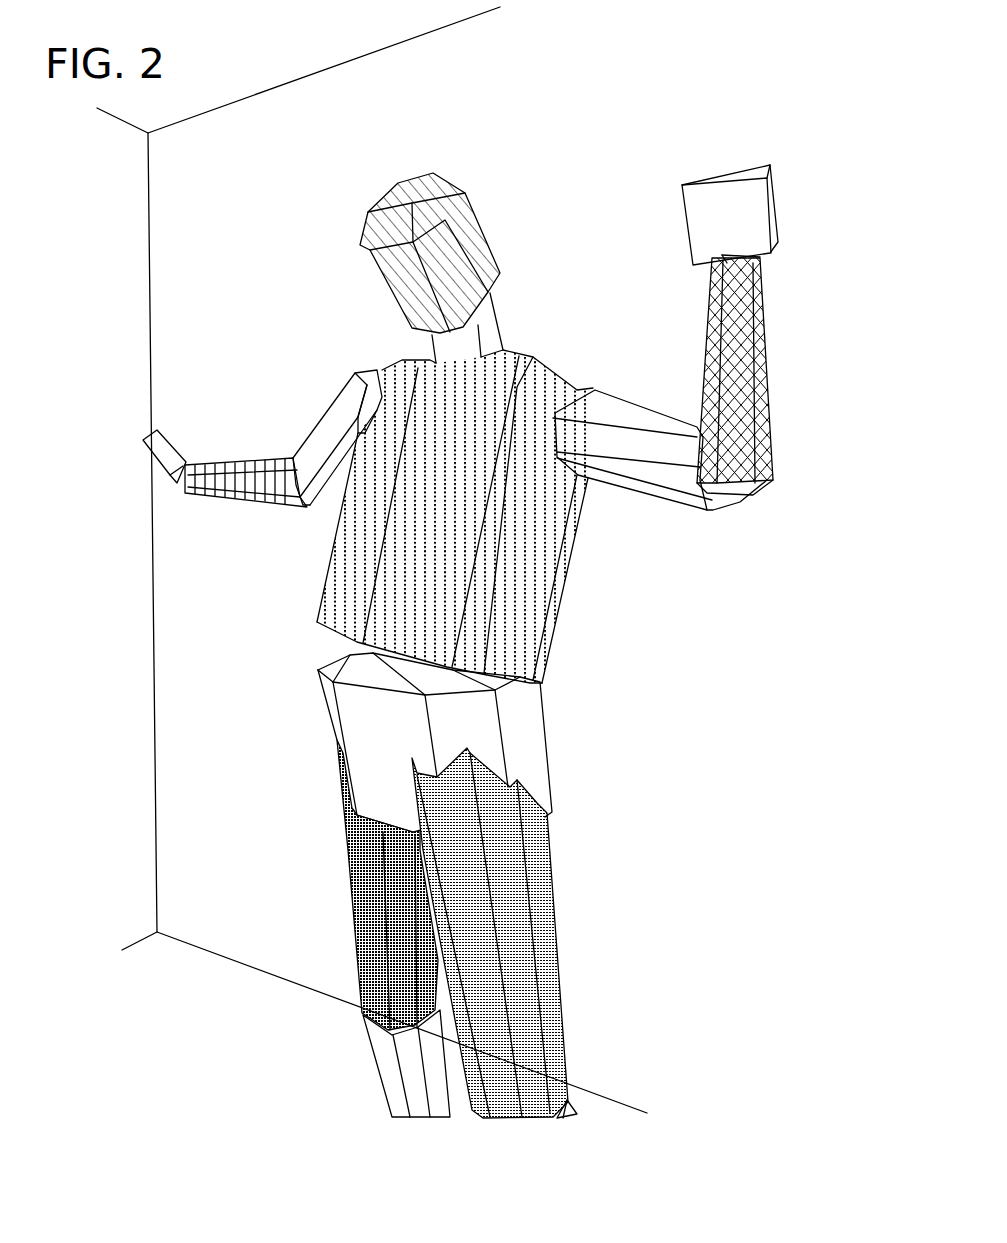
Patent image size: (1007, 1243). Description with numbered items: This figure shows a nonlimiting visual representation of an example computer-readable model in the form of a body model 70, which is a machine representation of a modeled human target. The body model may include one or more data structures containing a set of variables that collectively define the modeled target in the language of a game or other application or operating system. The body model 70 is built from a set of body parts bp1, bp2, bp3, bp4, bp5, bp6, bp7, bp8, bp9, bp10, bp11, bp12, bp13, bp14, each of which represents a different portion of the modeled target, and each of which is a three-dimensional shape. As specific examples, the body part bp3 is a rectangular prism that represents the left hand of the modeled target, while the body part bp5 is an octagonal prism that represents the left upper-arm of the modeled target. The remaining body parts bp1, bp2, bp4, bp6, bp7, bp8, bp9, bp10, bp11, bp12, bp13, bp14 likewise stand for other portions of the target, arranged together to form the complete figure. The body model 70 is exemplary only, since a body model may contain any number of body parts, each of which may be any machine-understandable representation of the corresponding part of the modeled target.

The body model 70 is at (558, 78).
The body part bp1 is at (488, 219).
The body part bp2 is at (514, 322).
The body part bp3 is at (742, 160).
The body part bp4 is at (697, 364).
The body part bp5 is at (646, 506).
The body part bp6 is at (315, 577).
The body part bp7 is at (168, 426).
The body part bp8 is at (234, 452).
The body part bp9 is at (334, 385).
The body part bp10 is at (553, 704).
The body part bp11 is at (562, 893).
The body part bp12 is at (585, 1097).
The body part bp13 is at (370, 1077).
The body part bp14 is at (340, 927).